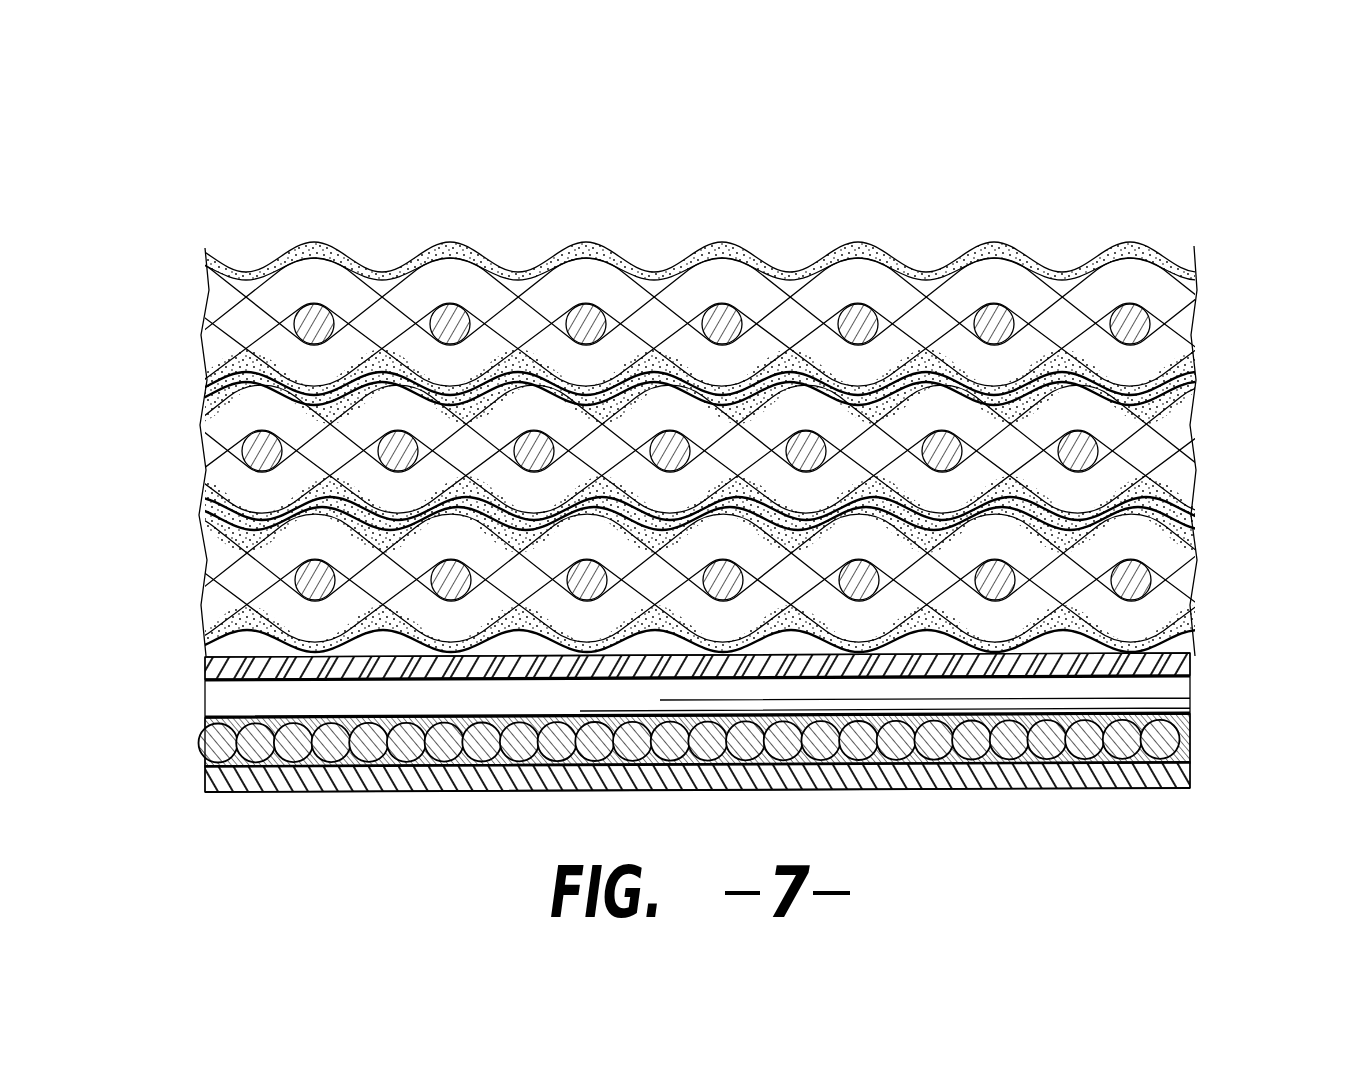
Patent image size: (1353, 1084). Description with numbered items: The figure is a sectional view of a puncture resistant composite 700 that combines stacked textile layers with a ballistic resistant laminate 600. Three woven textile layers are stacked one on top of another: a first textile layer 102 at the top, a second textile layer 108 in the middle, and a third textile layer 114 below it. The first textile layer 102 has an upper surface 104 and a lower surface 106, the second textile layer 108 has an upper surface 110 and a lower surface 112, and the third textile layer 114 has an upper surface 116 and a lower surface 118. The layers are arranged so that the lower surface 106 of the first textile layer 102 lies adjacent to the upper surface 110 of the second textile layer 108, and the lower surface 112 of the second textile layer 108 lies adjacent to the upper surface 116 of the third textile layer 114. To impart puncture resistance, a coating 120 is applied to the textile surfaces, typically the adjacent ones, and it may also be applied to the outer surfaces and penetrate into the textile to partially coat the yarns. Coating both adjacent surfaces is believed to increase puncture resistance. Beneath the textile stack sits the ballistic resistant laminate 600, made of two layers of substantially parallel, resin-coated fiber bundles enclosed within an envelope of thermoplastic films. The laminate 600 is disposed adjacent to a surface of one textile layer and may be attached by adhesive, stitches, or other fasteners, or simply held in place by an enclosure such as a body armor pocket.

The puncture resistant composite 700 is at (1083, 173).
The first textile layer 102 is at (681, 291).
The upper surface 104 is at (1220, 243).
The lower surface 106 is at (749, 322).
The second textile layer 108 is at (1220, 373).
The upper surface 110 is at (681, 322).
The lower surface 112 is at (1220, 515).
The third textile layer 114 is at (682, 595).
The upper surface 116 is at (682, 578).
The lower surface 118 is at (287, 635).
The coating 120 is at (750, 252).
The ballistic resistant laminate 600 is at (1220, 655).